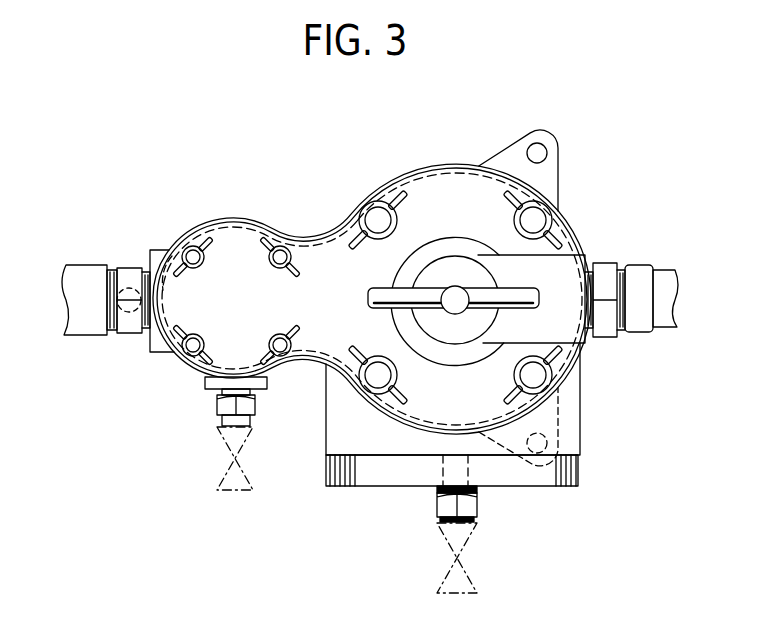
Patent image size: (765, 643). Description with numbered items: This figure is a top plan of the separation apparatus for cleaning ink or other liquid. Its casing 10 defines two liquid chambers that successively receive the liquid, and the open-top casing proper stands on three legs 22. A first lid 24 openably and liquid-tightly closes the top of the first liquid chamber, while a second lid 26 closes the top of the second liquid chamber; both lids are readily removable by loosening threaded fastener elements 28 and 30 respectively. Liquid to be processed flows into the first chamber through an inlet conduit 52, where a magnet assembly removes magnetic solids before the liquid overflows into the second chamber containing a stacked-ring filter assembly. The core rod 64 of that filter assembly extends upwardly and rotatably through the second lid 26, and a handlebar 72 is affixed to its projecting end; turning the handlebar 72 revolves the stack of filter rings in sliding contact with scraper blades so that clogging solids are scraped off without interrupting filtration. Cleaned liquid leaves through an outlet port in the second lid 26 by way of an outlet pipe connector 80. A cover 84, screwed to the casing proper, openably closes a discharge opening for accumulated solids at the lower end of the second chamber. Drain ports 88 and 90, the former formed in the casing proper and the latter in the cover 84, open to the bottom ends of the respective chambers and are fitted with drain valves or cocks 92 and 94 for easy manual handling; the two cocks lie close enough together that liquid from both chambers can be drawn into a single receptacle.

The casing 10 is at (205, 222).
The legs 22 is at (558, 142).
The first lid 24 is at (241, 237).
The second lid 26 is at (432, 180).
The threaded fastener elements 28 is at (186, 358).
The threaded fastener elements 30 is at (373, 214).
The inlet conduit 52 is at (97, 265).
The core rod 64 is at (456, 296).
The handlebar 72 is at (380, 312).
The outlet pipe connector 80 is at (634, 272).
The cover 84 is at (550, 488).
The drain port 88 is at (218, 396).
The drain port 90 is at (472, 468).
The drain valve or cock 92 is at (258, 437).
The drain valve or cock 94 is at (452, 545).